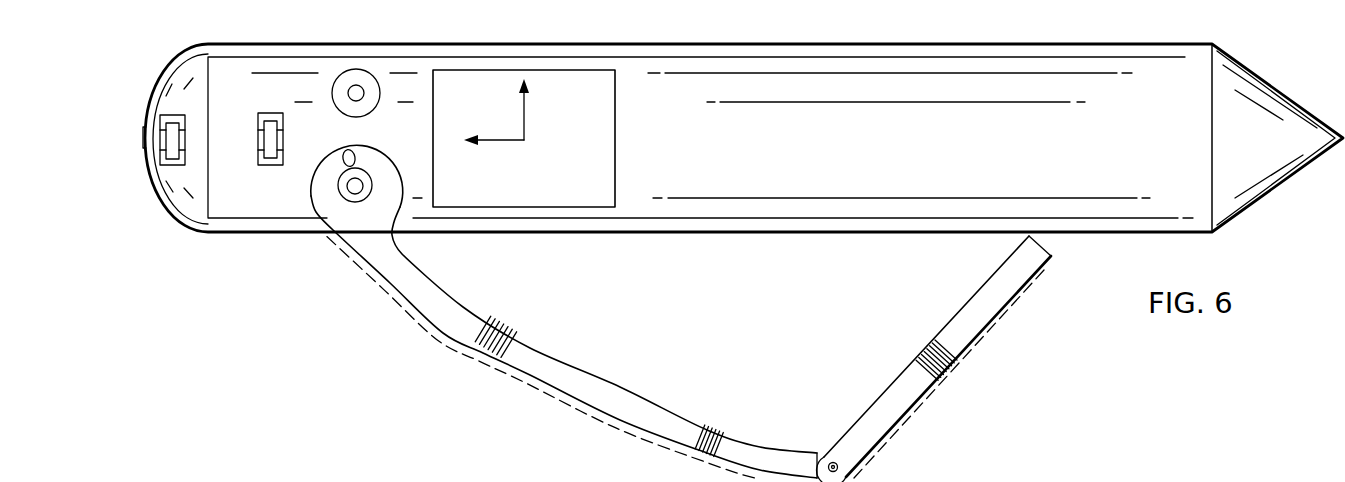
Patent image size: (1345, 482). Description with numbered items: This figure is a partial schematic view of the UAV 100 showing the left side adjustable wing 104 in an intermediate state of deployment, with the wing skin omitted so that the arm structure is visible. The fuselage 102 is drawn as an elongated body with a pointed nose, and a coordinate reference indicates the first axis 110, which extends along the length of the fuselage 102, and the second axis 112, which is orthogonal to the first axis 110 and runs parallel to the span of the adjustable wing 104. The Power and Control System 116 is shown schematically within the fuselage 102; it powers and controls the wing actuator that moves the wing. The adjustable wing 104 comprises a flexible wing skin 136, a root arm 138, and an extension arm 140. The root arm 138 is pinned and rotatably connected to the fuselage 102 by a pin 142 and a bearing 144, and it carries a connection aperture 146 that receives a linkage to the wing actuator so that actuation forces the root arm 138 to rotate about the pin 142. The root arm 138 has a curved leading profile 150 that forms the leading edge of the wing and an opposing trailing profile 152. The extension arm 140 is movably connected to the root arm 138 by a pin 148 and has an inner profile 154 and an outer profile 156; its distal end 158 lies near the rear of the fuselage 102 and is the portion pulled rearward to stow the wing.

The UAV 100 is at (309, 317).
The fuselage 102 is at (727, 234).
The adjustable wing 104 is at (443, 349).
The first axis 110 is at (500, 141).
The second axis 112 is at (524, 115).
The Power and Control System (PCS) 116 is at (615, 139).
The flexible wing skin 136 is at (980, 347).
The root arm 138 is at (556, 363).
The extension arm 140 is at (887, 400).
The pin 142 is at (347, 200).
The bearing 144 is at (338, 173).
The connection aperture 146 is at (352, 164).
The pin 148 is at (833, 460).
The leading profile 150 is at (617, 420).
The trailing profile 152 is at (643, 400).
The inner profile 154 is at (962, 308).
The outer profile 156 is at (885, 437).
The distal end 158 is at (1042, 242).